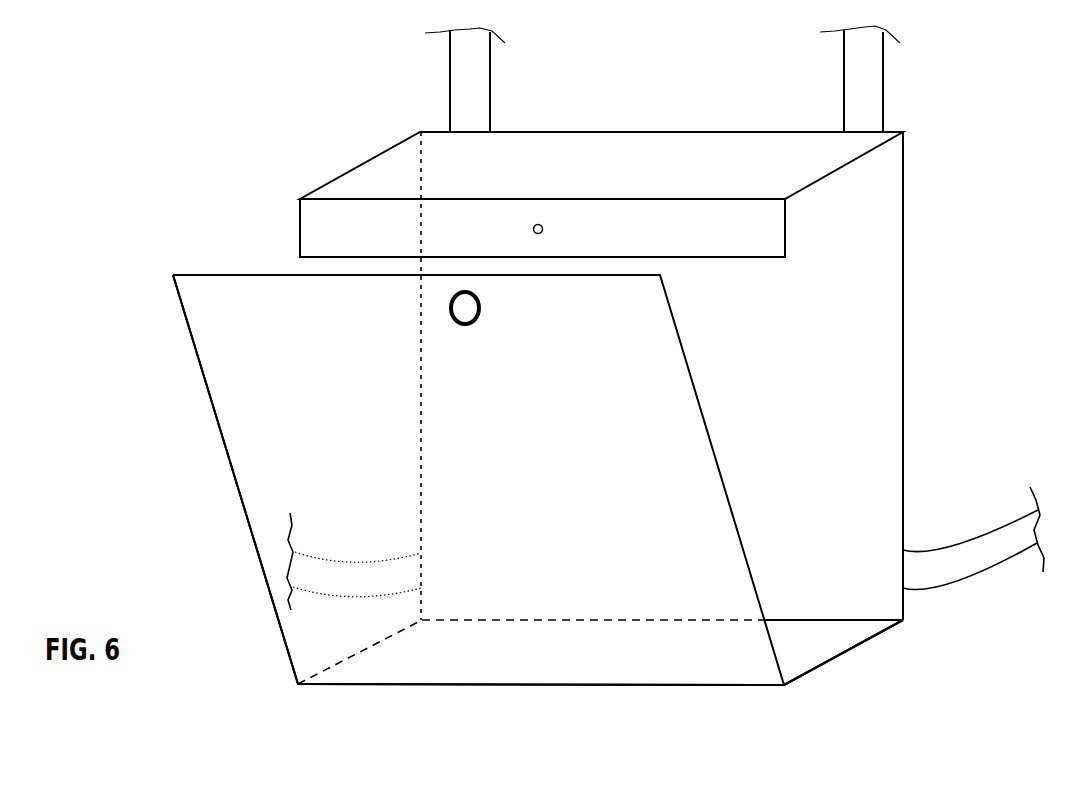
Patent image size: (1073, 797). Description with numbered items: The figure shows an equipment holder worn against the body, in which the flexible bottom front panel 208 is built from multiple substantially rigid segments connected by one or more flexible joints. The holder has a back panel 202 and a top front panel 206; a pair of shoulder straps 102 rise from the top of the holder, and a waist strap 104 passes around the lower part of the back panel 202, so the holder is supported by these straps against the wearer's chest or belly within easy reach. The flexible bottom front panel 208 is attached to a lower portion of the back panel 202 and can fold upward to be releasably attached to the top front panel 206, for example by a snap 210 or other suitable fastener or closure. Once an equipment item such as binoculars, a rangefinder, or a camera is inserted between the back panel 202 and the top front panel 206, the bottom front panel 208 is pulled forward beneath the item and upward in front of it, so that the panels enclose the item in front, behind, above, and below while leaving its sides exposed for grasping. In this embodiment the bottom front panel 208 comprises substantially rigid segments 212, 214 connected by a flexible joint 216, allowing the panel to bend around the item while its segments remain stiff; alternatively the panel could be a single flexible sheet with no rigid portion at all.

The shoulder straps 102 is at (844, 92).
The waist strap 104 is at (325, 578).
The back panel 202 is at (853, 345).
The top front panel 206 is at (393, 180).
The flexible bottom front panel 208 is at (840, 694).
The snap 210 is at (540, 234).
The substantially rigid segment 212 is at (300, 413).
The substantially rigid segment 214 is at (810, 644).
The flexible joint 216 is at (430, 687).